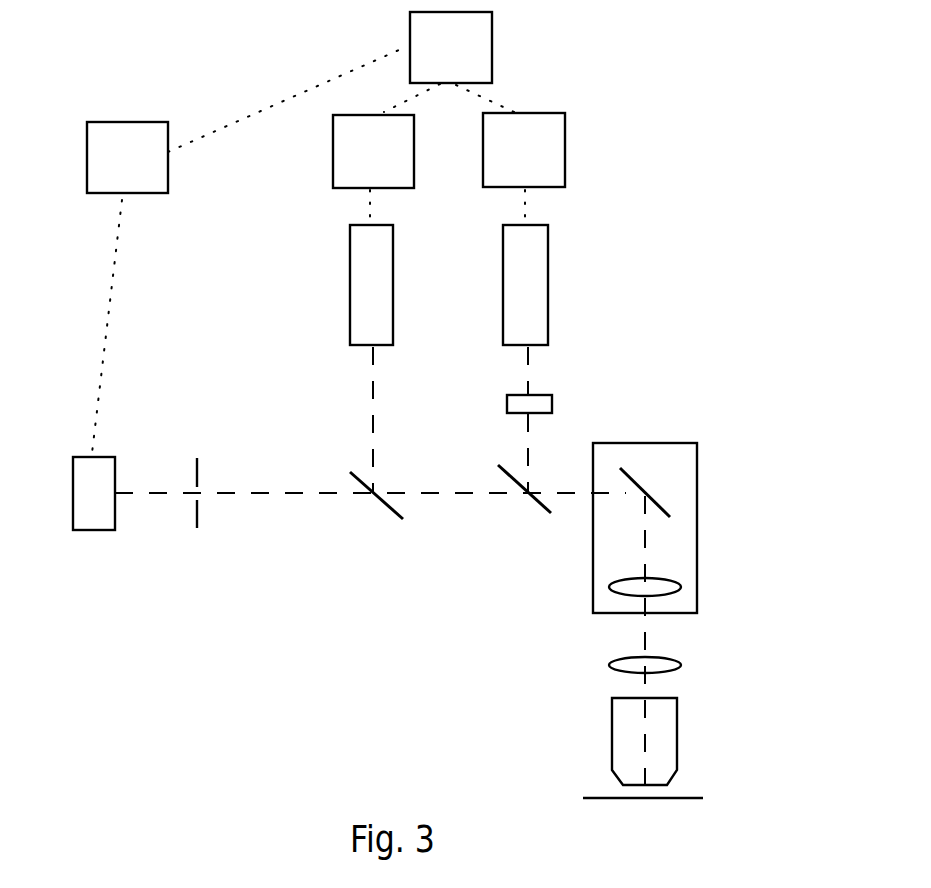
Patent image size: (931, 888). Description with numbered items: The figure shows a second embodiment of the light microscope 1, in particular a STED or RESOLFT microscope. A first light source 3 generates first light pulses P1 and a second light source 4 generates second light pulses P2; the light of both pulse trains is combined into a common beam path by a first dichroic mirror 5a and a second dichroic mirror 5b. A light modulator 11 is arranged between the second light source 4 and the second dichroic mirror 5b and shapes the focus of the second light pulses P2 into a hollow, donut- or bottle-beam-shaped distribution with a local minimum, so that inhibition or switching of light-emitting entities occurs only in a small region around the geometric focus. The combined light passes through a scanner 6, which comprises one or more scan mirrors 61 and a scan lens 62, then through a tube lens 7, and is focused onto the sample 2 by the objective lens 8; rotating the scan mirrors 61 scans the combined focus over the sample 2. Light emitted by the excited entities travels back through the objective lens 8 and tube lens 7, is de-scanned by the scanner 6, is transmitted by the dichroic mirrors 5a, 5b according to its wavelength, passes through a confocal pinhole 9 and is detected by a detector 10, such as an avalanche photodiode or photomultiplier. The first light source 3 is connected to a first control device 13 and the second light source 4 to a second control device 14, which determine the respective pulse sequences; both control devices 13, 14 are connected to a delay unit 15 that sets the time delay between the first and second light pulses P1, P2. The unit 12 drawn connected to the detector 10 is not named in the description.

The light microscope 1 is at (770, 90).
The sample 2 is at (703, 799).
The first light source 3 is at (350, 288).
The second light source 4 is at (548, 286).
The first dichroic mirror 5a is at (390, 515).
The second dichroic mirror 5b is at (538, 508).
The scanner 6 is at (648, 442).
The scan mirrors 61 is at (637, 482).
The scan lens 62 is at (681, 587).
The tube lens 7 is at (681, 665).
The objective lens 8 is at (677, 735).
The confocal pinhole 9 is at (214, 518).
The detector 10 is at (95, 530).
The light modulator 11 is at (507, 397).
The evaluation unit 12 is at (132, 120).
The first control device 13 is at (333, 148).
The second control device 14 is at (565, 150).
The delay unit 15 is at (492, 43).
The first light pulses P1 is at (372, 410).
The second light pulses P2 is at (529, 370).